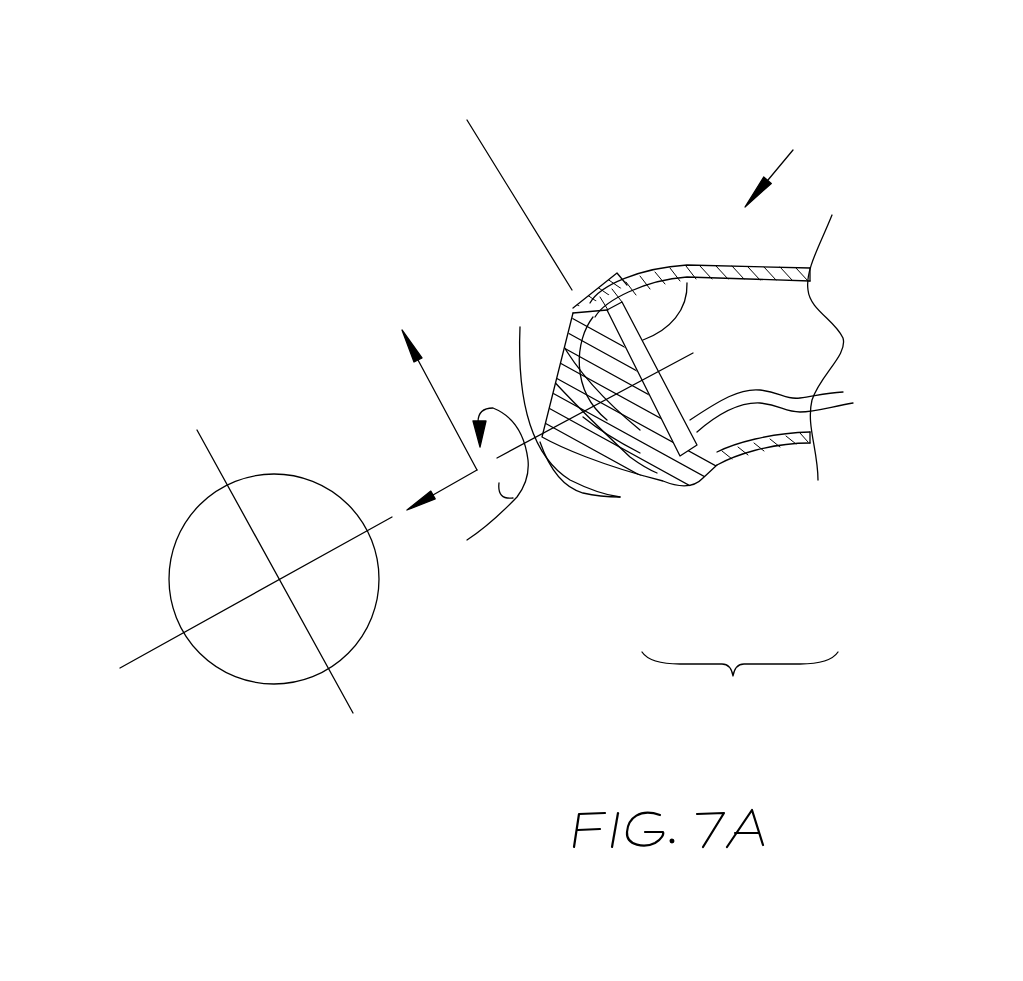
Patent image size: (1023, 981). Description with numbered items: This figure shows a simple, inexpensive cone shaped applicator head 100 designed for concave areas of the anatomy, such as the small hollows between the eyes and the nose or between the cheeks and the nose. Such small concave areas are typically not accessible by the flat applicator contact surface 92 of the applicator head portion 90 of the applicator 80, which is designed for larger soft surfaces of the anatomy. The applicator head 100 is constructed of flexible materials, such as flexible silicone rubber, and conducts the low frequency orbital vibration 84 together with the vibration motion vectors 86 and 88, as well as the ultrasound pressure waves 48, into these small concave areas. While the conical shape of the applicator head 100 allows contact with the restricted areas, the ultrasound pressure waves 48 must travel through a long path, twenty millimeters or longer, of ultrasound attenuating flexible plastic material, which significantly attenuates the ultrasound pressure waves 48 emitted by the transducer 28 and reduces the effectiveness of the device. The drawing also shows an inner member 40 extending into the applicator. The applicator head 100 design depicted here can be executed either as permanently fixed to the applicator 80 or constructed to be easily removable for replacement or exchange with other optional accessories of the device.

The transducer 28 is at (687, 267).
The inner member 40 is at (927, 530).
The ultrasound pressure waves 48 is at (575, 470).
The applicator 80 is at (785, 161).
The low frequency orbital vibration 84 is at (477, 492).
The vibration motion vector 86 is at (432, 488).
The vibration motion vector 88 is at (406, 400).
The applicator head portion 90 is at (740, 682).
The flat applicator contact surface 92 is at (498, 160).
The cone shaped applicator head 100 is at (657, 480).